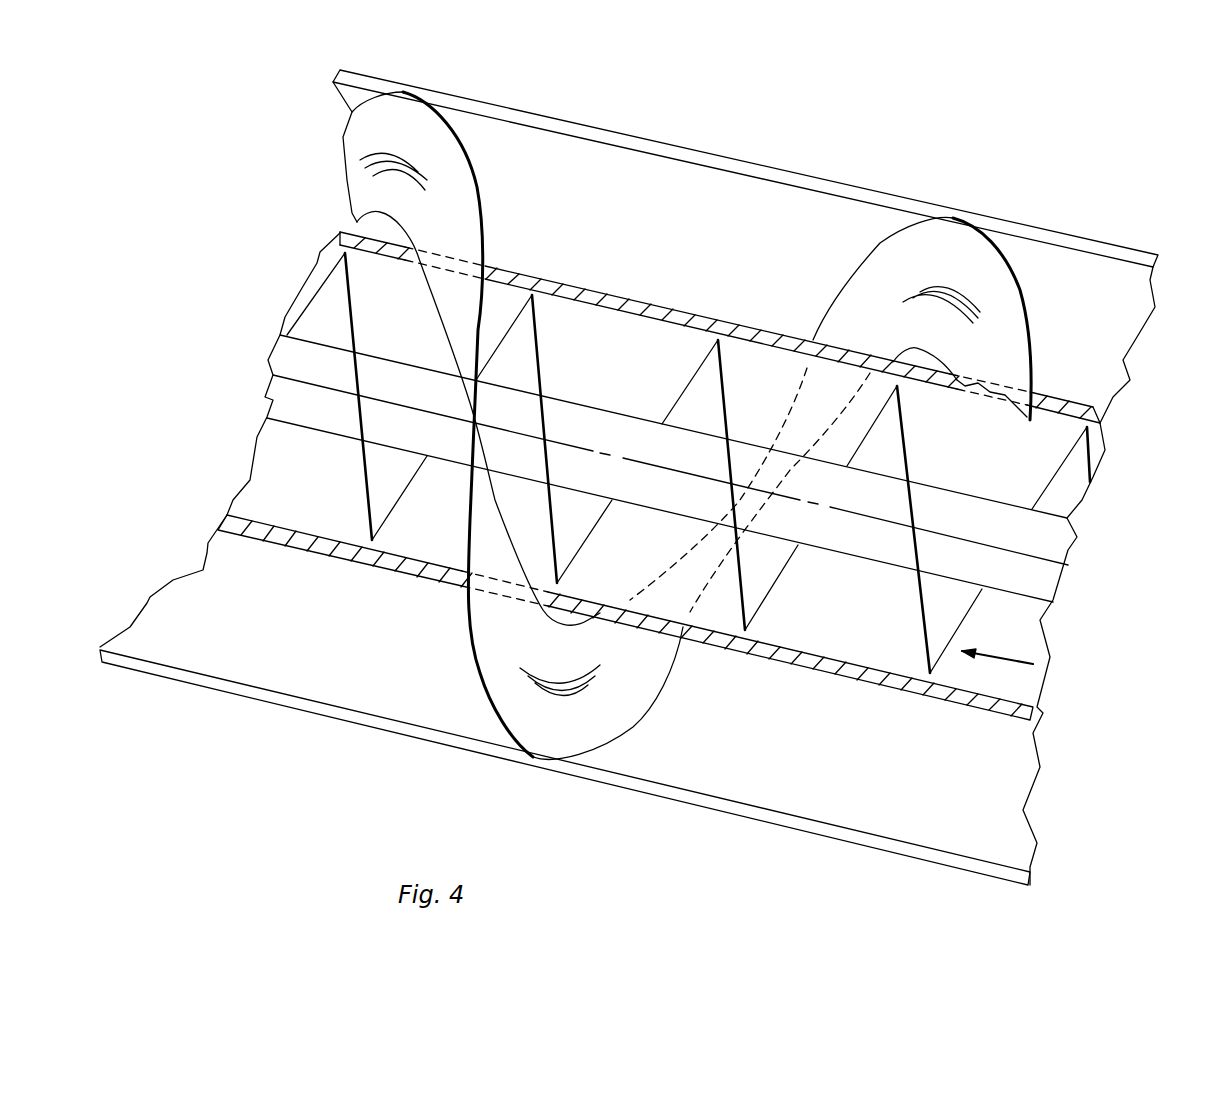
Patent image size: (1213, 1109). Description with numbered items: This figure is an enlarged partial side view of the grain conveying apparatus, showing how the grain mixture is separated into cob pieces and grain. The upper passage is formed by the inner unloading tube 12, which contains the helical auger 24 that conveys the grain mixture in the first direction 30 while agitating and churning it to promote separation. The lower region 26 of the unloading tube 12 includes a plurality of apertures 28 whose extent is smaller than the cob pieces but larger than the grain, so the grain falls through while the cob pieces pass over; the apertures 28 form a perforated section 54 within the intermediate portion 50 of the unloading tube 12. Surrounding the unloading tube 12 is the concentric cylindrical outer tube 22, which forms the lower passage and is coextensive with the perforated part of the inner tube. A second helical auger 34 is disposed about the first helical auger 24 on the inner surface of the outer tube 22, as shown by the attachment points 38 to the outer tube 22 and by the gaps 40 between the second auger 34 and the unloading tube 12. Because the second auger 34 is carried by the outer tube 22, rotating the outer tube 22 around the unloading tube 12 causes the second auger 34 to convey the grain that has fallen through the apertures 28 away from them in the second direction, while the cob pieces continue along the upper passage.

The unloading tube 12 is at (1077, 407).
The outer tube 22 is at (1077, 273).
The helical auger 24 is at (540, 355).
The lower region 26 is at (803, 627).
The apertures 28 is at (385, 568).
The first direction 30 is at (1010, 653).
The second helical auger 34 is at (865, 262).
The attachment points 38 is at (408, 92).
The gaps 40 is at (392, 221).
The intermediate portion 50 is at (622, 240).
The perforated section 54 is at (693, 660).